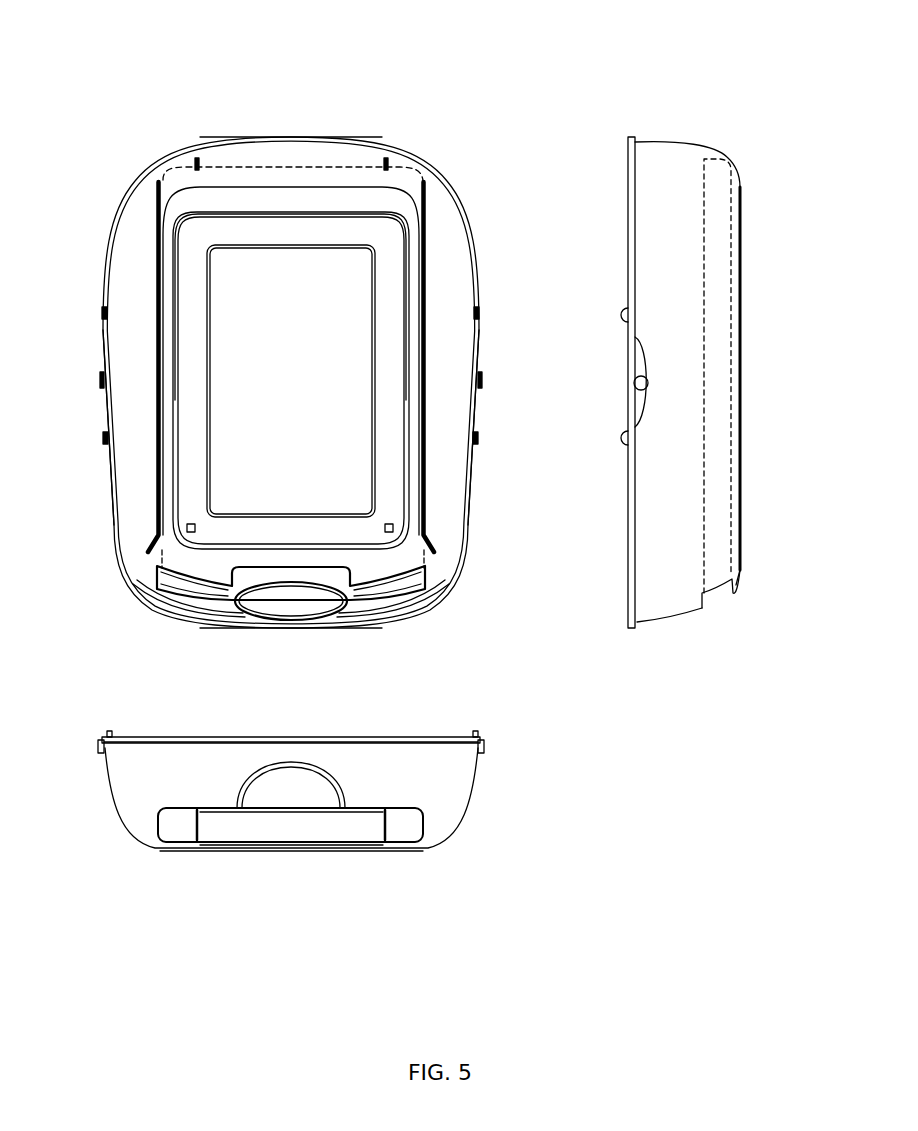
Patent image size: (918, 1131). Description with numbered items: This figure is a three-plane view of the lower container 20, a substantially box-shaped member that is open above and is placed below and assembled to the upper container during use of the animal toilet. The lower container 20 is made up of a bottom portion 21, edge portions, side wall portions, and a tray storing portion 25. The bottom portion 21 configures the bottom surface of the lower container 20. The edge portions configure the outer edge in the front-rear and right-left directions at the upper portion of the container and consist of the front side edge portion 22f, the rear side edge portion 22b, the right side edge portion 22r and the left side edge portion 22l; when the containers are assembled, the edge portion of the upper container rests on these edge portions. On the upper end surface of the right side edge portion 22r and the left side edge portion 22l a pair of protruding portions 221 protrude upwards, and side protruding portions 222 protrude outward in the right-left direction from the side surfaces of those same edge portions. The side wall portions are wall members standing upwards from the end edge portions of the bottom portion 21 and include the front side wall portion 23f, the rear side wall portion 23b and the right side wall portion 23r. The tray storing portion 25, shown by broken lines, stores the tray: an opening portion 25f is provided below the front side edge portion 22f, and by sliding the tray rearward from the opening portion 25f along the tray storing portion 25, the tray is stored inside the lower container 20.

The lower container 20 is at (447, 119).
The bottom portion 21 is at (742, 360).
The rear side edge portion 22b is at (292, 137).
The front side edge portion 22f is at (383, 619).
The left side edge portion 22l is at (108, 480).
The right side edge portion 22r is at (473, 480).
The protruding portion 221 is at (104, 312).
The side protruding portion 222 is at (101, 380).
The rear side wall portion 23b is at (680, 141).
The front side wall portion 23f is at (670, 621).
The right side wall portion 23r is at (680, 420).
The tray storing portion 25 is at (225, 166).
The opening portion 25f is at (207, 601).